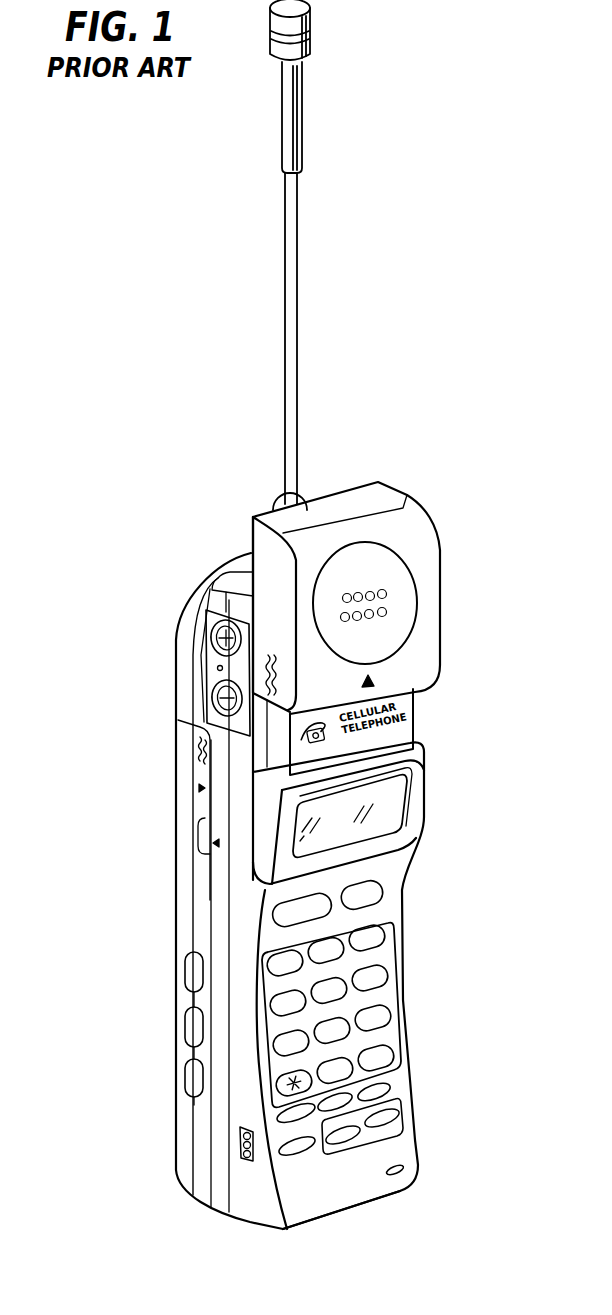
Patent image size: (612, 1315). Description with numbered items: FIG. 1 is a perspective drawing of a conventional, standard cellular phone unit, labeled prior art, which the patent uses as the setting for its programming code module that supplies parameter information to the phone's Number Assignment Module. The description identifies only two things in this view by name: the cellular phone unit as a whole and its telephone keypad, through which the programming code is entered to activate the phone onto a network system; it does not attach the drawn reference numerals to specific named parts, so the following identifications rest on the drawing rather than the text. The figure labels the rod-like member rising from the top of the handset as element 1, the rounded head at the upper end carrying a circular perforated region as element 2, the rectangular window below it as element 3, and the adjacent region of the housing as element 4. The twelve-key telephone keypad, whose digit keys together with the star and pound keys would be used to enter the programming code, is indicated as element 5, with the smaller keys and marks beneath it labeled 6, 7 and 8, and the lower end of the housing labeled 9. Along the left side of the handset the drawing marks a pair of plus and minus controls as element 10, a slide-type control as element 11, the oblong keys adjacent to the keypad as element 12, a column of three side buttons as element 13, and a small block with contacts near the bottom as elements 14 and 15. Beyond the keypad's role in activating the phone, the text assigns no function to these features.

The antenna 1 is at (302, 292).
The earpiece speaker 2 is at (405, 601).
The display 3 is at (385, 826).
The end key 4 is at (385, 897).
The keypad 5 is at (401, 1026).
The function key 6 is at (385, 1090).
The function key block 7 is at (400, 1124).
The indicator 8 is at (405, 1170).
The housing 9 is at (356, 1213).
The volume buttons 10 is at (204, 672).
The side slide switch 11 is at (191, 848).
The memo key 12 is at (262, 926).
The side buttons 13 is at (276, 1088).
The connector 14 is at (241, 1129).
The connector contacts 15 is at (241, 1160).